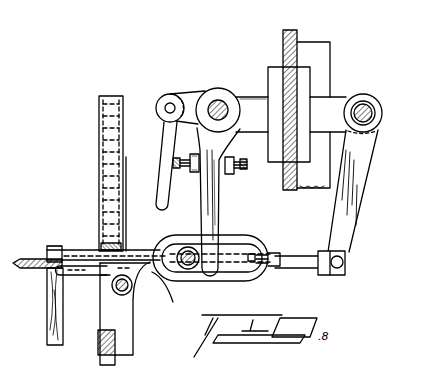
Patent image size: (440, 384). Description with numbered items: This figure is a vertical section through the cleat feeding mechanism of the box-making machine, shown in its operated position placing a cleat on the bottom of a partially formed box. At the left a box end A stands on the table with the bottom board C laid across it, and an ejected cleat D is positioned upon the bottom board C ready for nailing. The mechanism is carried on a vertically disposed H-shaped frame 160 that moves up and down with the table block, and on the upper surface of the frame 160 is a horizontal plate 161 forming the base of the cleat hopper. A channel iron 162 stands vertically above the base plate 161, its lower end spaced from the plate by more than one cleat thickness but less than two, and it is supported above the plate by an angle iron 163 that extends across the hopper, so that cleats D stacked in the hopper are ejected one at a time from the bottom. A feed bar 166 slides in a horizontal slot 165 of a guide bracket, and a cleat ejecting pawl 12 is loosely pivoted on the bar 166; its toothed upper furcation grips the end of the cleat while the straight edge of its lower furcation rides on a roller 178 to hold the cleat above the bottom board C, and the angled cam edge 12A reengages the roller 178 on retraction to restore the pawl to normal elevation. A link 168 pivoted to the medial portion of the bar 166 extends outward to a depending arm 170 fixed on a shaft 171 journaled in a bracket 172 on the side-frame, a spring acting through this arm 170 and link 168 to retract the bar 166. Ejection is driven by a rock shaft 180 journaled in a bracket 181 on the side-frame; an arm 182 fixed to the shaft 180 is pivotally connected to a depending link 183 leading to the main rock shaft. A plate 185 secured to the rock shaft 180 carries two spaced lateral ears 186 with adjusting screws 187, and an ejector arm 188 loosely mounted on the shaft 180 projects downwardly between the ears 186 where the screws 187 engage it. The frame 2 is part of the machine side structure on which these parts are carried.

The frame plate 2 is at (299, 44).
The cleat ejecting pawl 12 is at (135, 246).
The angled cam edge 12A is at (141, 284).
The H-shaped frame 160 is at (100, 348).
The horizontal plate 161 is at (78, 264).
The channel iron 162 is at (124, 148).
The angle iron 163 is at (158, 166).
The horizontal slot 165 is at (172, 272).
The feed bar 166 is at (188, 247).
The link 168 is at (293, 268).
The depending arm 170 is at (372, 230).
The shaft 171 is at (371, 101).
The bracket 172 is at (336, 104).
The roller 178 is at (112, 289).
The rock shaft 180 is at (221, 100).
The bracket 181 is at (256, 101).
The arm 182 is at (191, 98).
The depending link 183 is at (164, 96).
The plate 185 is at (230, 148).
The lateral ear 186 is at (193, 172).
The adjusting screw 187 is at (173, 162).
The ejector arm 188 is at (216, 219).
The box end A is at (51, 344).
The bottom board C is at (30, 268).
The cleat strip D is at (48, 252).